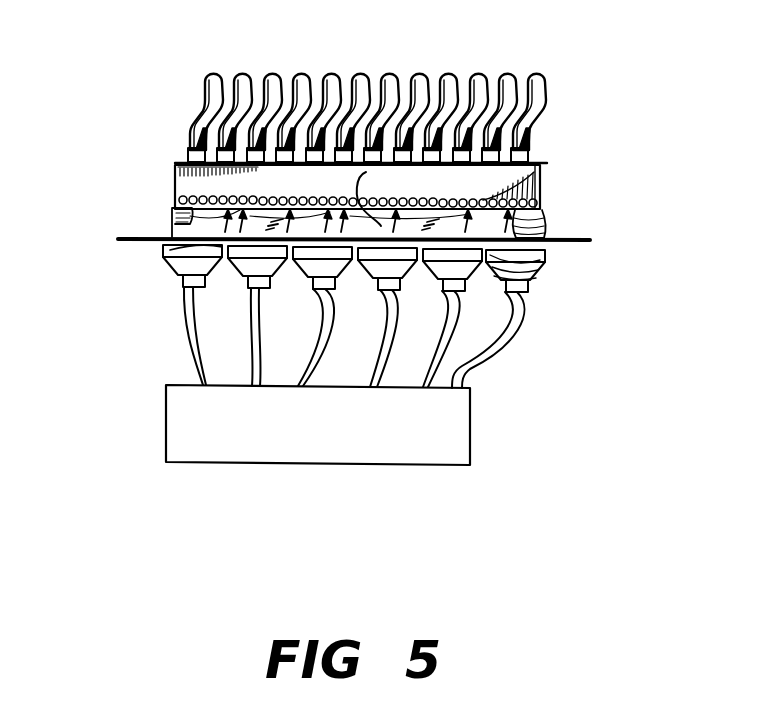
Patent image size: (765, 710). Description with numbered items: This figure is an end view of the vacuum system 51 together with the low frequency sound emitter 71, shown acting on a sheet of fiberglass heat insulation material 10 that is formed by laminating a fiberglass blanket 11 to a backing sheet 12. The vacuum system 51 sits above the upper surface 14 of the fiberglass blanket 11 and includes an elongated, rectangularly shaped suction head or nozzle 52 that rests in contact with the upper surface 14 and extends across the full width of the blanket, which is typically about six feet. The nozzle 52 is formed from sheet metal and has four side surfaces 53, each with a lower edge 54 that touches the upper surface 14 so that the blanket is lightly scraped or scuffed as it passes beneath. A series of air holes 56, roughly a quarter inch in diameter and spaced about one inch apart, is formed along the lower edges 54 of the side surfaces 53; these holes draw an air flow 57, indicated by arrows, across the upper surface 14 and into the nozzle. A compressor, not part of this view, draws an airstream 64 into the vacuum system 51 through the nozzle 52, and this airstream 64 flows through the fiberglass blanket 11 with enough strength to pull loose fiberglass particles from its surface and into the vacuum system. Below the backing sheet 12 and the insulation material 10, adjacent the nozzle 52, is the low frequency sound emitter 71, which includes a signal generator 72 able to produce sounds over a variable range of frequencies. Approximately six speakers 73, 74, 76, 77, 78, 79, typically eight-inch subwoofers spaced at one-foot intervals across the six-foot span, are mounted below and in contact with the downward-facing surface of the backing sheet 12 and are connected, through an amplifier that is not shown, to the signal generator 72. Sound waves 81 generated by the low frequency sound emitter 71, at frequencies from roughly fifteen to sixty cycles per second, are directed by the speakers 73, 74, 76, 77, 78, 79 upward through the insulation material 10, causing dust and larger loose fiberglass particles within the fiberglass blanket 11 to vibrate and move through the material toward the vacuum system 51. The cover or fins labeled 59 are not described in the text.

The fiberglass heat insulation material 10 is at (602, 212).
The fiberglass blanket 11 is at (250, 218).
The backing sheet 12 is at (592, 239).
The upper surface 14 is at (512, 179).
The vacuum system 51 is at (154, 128).
The suction head or nozzle 52 is at (534, 135).
The side surfaces 53 is at (454, 192).
The lower edge 54 is at (190, 250).
The air holes 56 is at (196, 237).
The air flow 57 is at (376, 199).
The heat dissipating fins 59 is at (444, 74).
The airstream 64 is at (163, 208).
The low frequency sound emitter 71 is at (135, 444).
The signal generator 72 is at (306, 446).
The speaker 73 is at (172, 276).
The speaker 74 is at (243, 277).
The speaker 76 is at (305, 278).
The speaker 77 is at (378, 284).
The speaker 78 is at (433, 285).
The speaker 79 is at (497, 286).
The sound waves 81 is at (538, 275).